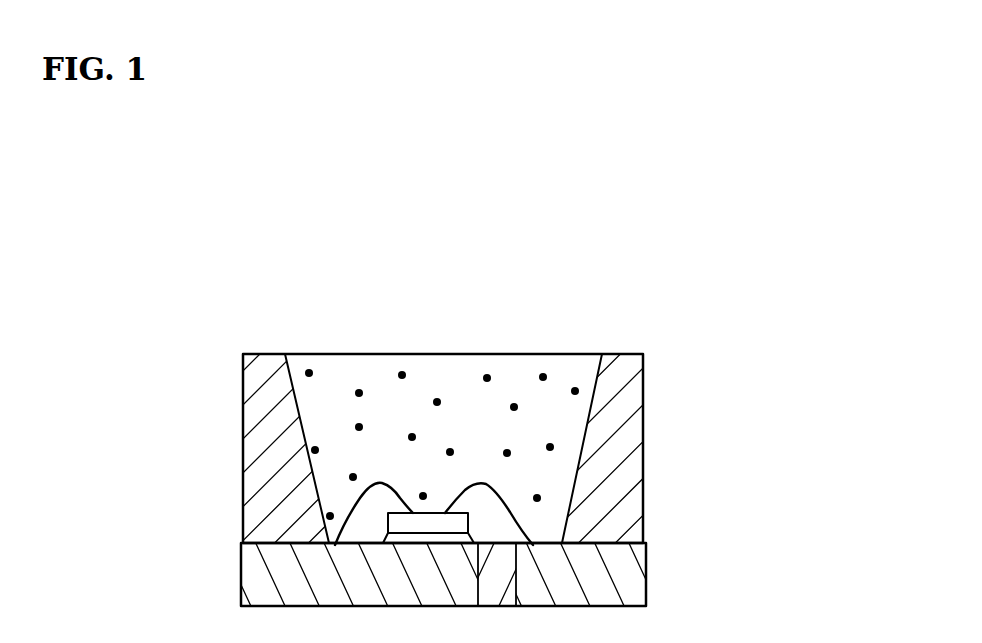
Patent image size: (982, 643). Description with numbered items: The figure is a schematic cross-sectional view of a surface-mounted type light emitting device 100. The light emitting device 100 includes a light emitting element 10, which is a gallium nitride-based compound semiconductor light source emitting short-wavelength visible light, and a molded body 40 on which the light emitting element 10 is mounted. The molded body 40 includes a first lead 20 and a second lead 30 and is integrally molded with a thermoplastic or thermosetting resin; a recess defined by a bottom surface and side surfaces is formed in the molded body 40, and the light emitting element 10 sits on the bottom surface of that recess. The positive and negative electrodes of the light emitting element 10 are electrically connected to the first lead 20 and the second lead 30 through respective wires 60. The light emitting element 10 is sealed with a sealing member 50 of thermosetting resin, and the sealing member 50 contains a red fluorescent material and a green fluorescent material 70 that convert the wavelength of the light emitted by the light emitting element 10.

The light emitting device 100 is at (732, 203).
The light emitting element 10 is at (433, 513).
The first lead 20 is at (241, 547).
The second lead 30 is at (618, 580).
The molded body 40 is at (630, 443).
The sealing member 50 is at (543, 373).
The wires 60 is at (365, 513).
The green fluorescent material 70 is at (548, 368).